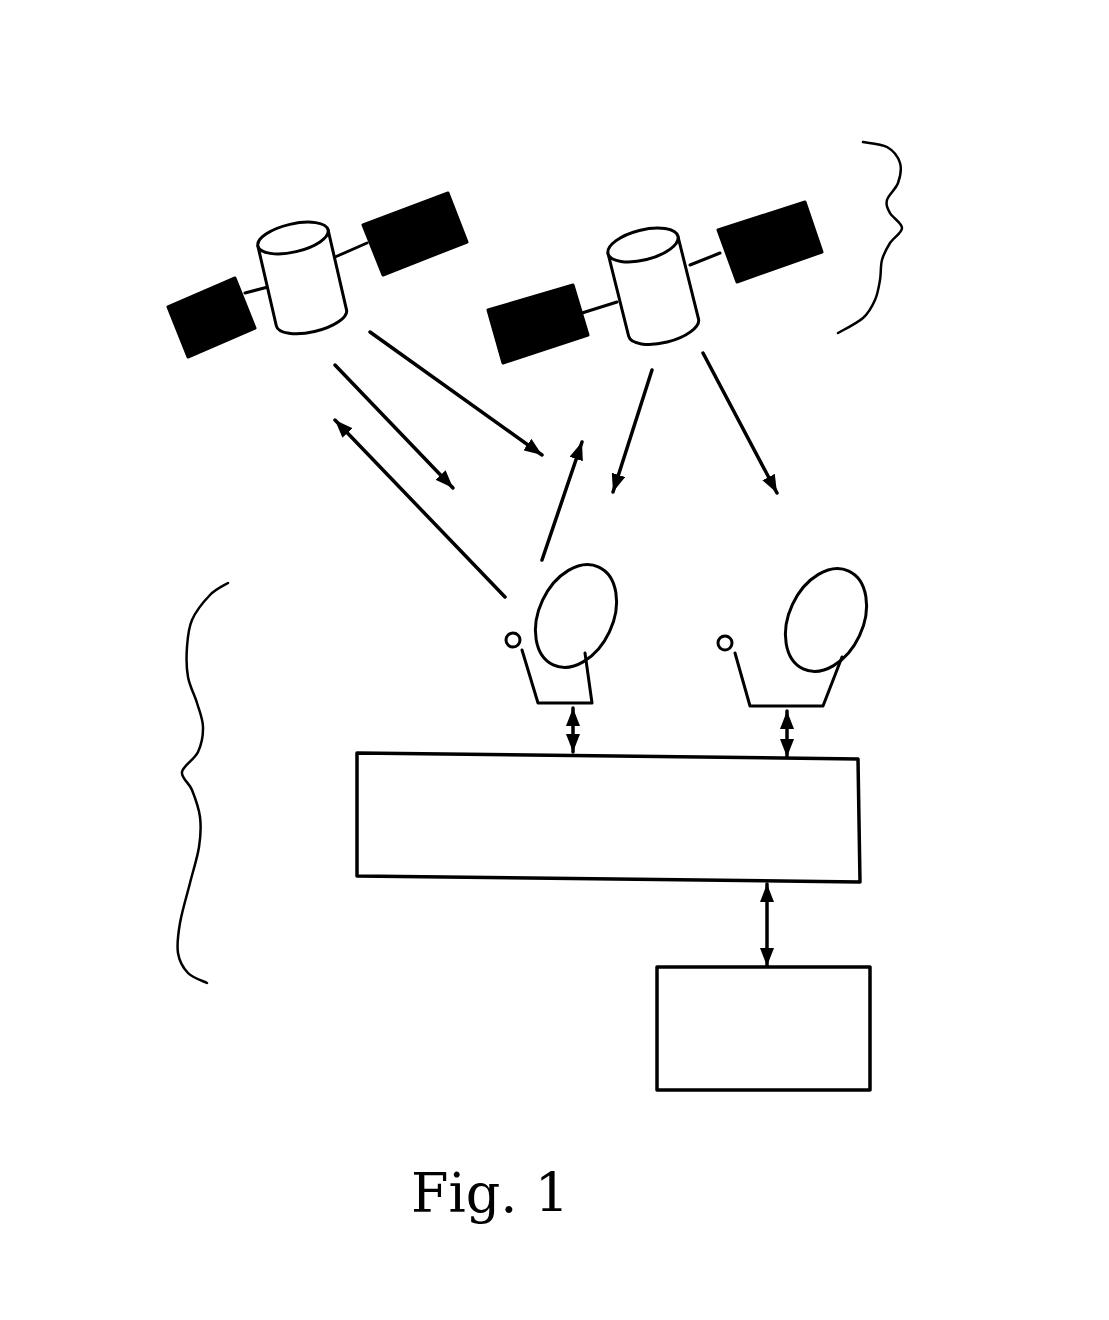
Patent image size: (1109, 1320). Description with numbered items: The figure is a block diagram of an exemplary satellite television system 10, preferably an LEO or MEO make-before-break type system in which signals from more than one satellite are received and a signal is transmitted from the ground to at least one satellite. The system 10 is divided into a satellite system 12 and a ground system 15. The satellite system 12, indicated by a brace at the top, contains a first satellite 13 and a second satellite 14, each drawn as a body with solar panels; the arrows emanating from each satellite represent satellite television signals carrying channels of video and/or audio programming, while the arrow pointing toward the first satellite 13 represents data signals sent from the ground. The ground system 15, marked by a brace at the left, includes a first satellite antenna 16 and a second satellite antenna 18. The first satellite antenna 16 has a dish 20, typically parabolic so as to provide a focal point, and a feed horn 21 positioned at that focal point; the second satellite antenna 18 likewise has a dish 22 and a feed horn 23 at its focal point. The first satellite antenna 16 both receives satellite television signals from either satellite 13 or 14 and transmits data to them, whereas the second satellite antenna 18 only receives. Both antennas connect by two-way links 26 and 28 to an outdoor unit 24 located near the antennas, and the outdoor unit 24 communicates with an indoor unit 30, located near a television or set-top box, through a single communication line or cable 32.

The satellite television system 10 is at (115, 76).
The satellite system 12 is at (570, 252).
The first satellite 13 is at (286, 238).
The second satellite 14 is at (640, 240).
The ground system 15 is at (508, 793).
The first satellite antenna 16 is at (550, 608).
The second satellite antenna 18 is at (773, 601).
The dish 20 is at (600, 609).
The feed horn 21 is at (506, 642).
The dish 22 is at (818, 590).
The feed horn 23 is at (718, 643).
The outdoor unit 24 is at (465, 858).
The first antenna link 26 is at (577, 733).
The second antenna link 28 is at (795, 735).
The indoor unit 30 is at (673, 1015).
The communication line or cable 32 is at (765, 915).